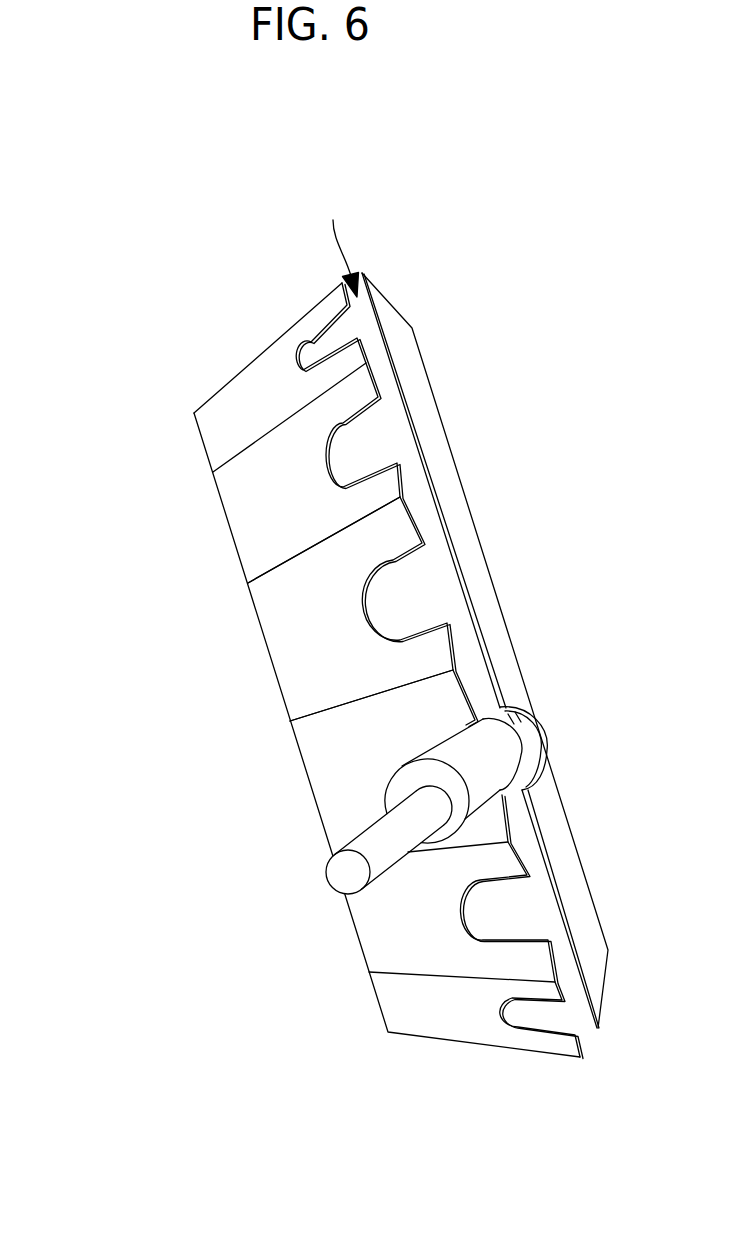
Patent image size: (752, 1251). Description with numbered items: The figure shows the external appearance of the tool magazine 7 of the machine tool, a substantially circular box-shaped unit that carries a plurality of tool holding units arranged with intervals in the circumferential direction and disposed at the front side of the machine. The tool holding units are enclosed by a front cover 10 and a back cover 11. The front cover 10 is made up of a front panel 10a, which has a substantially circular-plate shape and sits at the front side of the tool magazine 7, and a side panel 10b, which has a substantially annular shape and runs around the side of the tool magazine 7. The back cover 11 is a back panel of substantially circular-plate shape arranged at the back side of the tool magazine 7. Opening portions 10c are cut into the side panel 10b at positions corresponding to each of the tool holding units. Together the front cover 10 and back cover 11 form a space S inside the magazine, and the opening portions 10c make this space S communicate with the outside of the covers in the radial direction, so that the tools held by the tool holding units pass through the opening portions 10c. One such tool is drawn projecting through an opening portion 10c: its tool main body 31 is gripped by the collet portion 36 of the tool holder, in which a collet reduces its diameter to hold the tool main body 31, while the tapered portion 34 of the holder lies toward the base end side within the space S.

The tool magazine 7 is at (101, 368).
The front cover 10 is at (122, 533).
The front panel 10a is at (243, 565).
The side panel 10b is at (283, 623).
The opening portions 10c is at (305, 348).
The back cover 11 is at (458, 516).
The tool main body 31 is at (350, 833).
The tapered portion 34 is at (527, 715).
The collet portion 36 is at (410, 758).
The space S is at (341, 242).